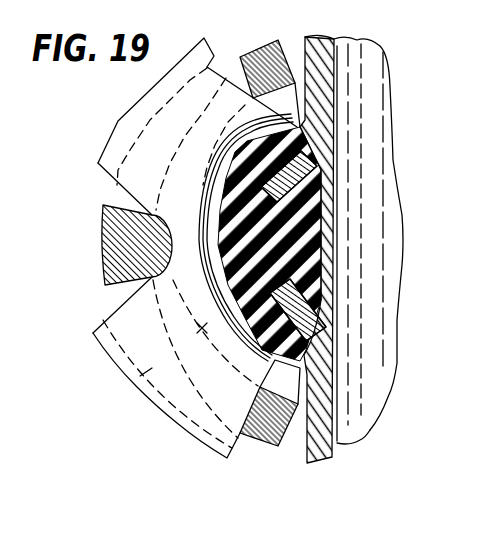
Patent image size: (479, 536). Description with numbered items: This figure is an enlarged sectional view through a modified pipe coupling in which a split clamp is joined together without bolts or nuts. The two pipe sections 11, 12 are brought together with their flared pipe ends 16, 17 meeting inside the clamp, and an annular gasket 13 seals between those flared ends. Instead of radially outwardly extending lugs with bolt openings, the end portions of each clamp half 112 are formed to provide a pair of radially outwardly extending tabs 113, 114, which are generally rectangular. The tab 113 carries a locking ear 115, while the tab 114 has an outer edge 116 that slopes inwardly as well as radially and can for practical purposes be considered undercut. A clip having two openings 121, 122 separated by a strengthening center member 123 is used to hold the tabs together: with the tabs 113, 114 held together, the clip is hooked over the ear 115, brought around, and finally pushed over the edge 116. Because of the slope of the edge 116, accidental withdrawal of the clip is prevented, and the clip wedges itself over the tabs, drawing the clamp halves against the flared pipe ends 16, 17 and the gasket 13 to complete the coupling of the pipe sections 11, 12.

The pipe section 11 is at (342, 444).
The pipe section 12 is at (325, 50).
The annular gasket 13 is at (322, 247).
The flared pipe end 16 is at (323, 283).
The flared pipe end 17 is at (320, 180).
The clamp half 112 is at (137, 381).
The tab 113 is at (117, 139).
The tab 114 is at (187, 418).
The locking ear 115 is at (208, 40).
The outer edge 116 is at (240, 448).
The opening 121 is at (115, 193).
The opening 122 is at (113, 303).
The strengthening center member 123 is at (103, 265).